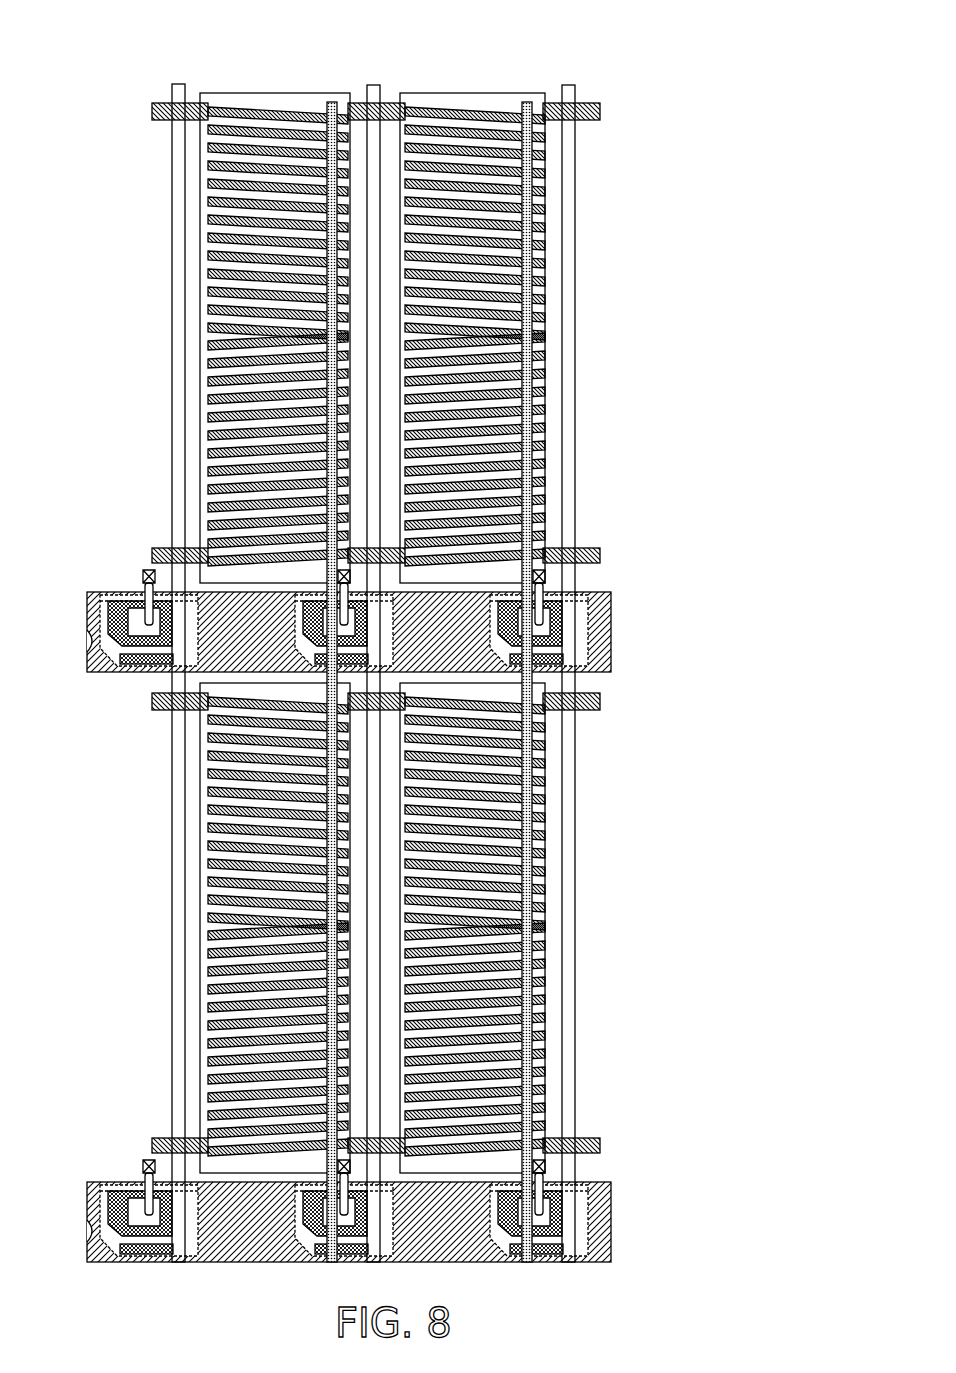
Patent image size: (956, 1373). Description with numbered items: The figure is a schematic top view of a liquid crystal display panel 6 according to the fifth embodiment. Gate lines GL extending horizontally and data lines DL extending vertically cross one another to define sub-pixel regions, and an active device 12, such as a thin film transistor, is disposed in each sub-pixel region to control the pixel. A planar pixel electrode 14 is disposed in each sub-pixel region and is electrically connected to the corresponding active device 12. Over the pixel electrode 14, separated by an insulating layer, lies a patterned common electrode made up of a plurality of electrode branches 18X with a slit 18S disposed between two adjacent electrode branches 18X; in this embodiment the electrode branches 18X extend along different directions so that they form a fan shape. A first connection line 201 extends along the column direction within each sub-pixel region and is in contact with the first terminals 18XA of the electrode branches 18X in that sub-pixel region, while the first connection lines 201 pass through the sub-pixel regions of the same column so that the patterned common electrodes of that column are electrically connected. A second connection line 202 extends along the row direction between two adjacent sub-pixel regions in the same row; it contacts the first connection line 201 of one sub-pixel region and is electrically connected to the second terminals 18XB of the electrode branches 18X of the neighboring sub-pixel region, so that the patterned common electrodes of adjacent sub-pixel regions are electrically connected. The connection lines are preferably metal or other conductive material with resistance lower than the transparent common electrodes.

The liquid crystal display panel 6 is at (727, 82).
The active device 12 is at (601, 660).
The pixel electrode 14 is at (545, 441).
The electrode branch 18X is at (380, 593).
The first terminal 18XA is at (320, 113).
The second terminal 18XB is at (410, 107).
The slit 18S is at (210, 156).
The first connection line 201 is at (329, 102).
The second connection line 202 is at (390, 103).
The data line DL is at (577, 90).
The gate line GL is at (611, 614).